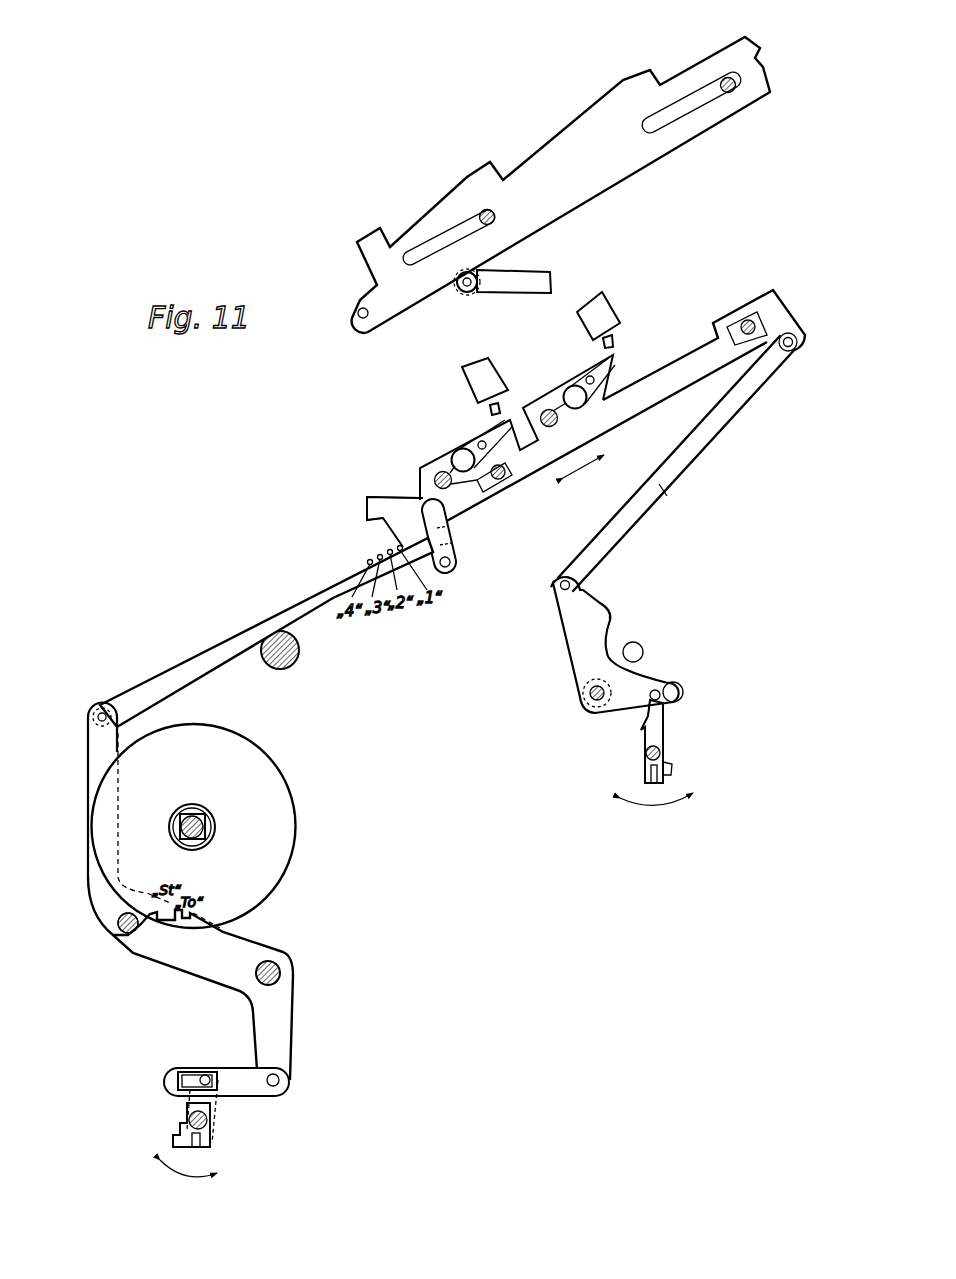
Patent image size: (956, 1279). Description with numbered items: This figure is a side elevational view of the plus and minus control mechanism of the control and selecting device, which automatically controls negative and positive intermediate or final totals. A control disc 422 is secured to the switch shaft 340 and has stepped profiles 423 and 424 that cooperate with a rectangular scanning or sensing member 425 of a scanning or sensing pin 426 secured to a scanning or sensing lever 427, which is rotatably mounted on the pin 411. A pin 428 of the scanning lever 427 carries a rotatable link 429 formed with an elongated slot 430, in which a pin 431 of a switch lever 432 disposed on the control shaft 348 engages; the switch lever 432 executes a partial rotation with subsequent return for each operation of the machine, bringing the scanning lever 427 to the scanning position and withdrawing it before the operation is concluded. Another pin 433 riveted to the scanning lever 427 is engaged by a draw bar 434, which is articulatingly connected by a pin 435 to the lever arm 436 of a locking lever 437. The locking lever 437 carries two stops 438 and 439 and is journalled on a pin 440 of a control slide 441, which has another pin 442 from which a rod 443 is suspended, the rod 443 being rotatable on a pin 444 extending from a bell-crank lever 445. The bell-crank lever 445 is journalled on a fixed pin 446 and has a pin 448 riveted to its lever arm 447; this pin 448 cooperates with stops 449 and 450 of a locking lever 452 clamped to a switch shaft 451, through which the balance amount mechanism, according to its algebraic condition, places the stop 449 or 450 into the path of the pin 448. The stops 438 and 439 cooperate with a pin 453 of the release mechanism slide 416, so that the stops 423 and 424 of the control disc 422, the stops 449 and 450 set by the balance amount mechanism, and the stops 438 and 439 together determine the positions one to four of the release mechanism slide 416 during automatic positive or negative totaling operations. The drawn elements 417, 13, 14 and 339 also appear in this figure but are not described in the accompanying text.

The release mechanism slide 416 is at (613, 177).
The link 417 is at (540, 277).
The pin 453 is at (358, 313).
The cam block 13 is at (483, 383).
The cam block 14 is at (600, 300).
The control slide 441 is at (677, 367).
The pin 442 is at (787, 360).
The rod 443 is at (663, 490).
The pin 444 is at (585, 583).
The bell-crank lever 445 is at (593, 620).
The fixed pin 446 is at (590, 700).
The lever arm 447 is at (680, 688).
The pin 448 is at (657, 687).
The stop 449 is at (665, 710).
The stop 450 is at (643, 720).
The switch shaft 451 is at (672, 765).
The locking lever 452 is at (658, 740).
The pin 440 is at (440, 510).
The lever arm 436 is at (455, 537).
The pin 435 is at (455, 572).
The locking lever 437 is at (397, 513).
The stop 438 is at (367, 497).
The stop 439 is at (380, 527).
The draw bar 434 is at (322, 587).
The pin 433 is at (100, 703).
The control disc 422 is at (283, 842).
The bearing 339 is at (207, 822).
The switch shaft 340 is at (193, 807).
The scanning or sensing lever 427 is at (243, 943).
The rectangular scanning or sensing member 425 is at (118, 925).
The scanning or sensing pin 426 is at (132, 935).
The stepped profile 423 is at (167, 921).
The stepped profile 424 is at (185, 921).
The pin 411 is at (282, 973).
The pin 428 is at (280, 1080).
The rotatable link 429 is at (263, 1093).
The elongated slot 430 is at (190, 1083).
The pin 431 is at (205, 1072).
The control shaft 348 is at (207, 1120).
The switch lever 432 is at (200, 1137).